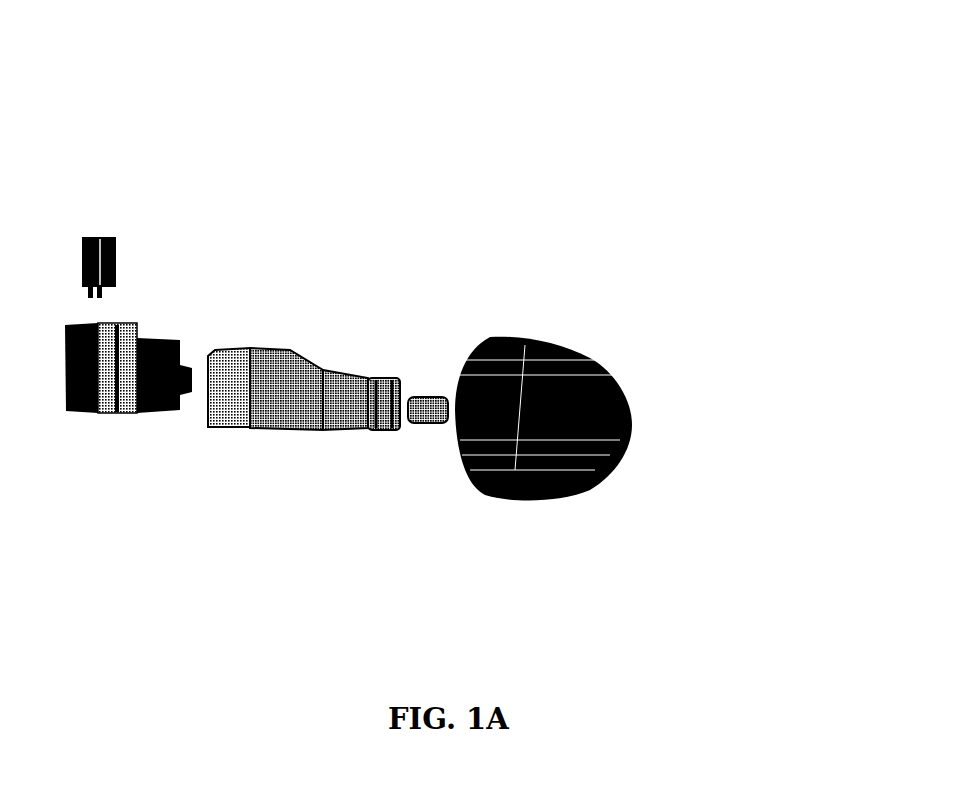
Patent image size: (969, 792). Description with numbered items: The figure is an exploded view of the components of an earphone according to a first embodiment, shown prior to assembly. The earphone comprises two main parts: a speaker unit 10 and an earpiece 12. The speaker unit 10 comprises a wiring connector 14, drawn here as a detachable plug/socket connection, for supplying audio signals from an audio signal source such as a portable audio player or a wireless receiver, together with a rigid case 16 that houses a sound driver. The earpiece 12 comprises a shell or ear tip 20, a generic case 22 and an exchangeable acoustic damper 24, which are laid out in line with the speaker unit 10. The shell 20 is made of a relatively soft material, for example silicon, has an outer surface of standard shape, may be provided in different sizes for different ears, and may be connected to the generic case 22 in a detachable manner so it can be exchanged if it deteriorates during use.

The speaker unit 10 is at (126, 448).
The earpiece 12 is at (375, 356).
The wiring connector 14 is at (82, 237).
The rigid case 16 is at (146, 338).
The shell 20 is at (602, 368).
The generic case 22 is at (282, 360).
The acoustic damper 24 is at (440, 395).